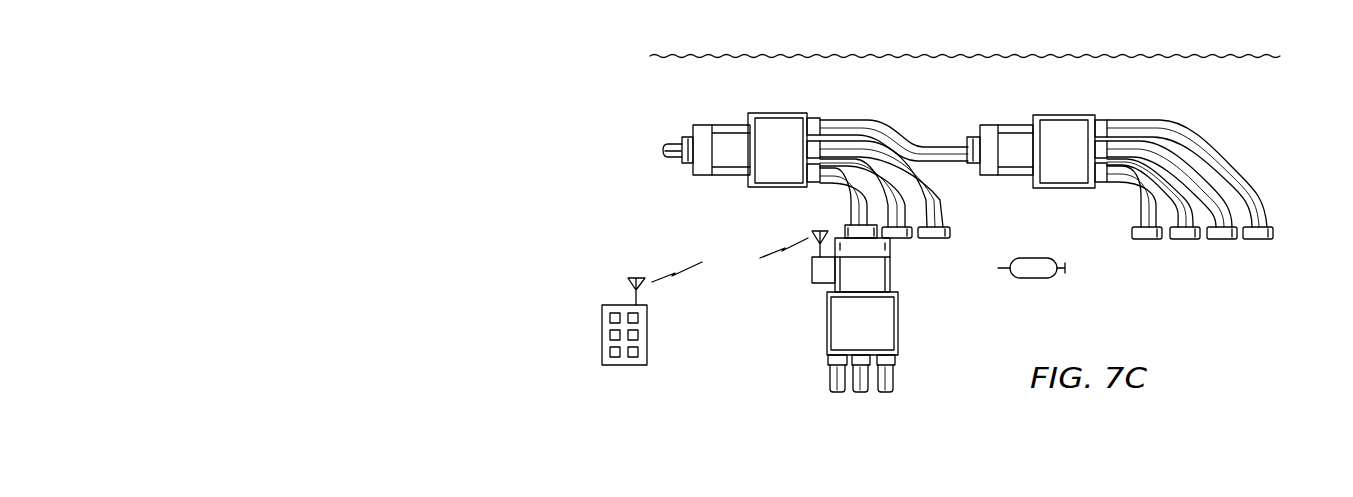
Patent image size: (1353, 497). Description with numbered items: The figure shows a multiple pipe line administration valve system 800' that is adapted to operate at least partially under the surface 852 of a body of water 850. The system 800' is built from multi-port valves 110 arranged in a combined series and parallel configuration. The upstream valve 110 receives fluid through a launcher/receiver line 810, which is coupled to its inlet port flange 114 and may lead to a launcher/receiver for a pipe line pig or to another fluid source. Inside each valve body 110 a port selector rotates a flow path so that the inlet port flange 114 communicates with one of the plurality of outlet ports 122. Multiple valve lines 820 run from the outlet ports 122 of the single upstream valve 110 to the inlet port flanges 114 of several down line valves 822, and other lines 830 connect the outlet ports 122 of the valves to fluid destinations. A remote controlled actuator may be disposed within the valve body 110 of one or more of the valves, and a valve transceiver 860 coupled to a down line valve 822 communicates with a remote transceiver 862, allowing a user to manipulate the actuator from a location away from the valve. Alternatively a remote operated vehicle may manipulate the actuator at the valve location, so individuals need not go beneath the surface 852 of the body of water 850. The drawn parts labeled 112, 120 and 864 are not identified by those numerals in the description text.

The multi-port valve 110 is at (758, 80).
The body 112 is at (720, 125).
The inlet port flange 114 is at (690, 172).
The controller block 120 is at (786, 113).
The outlet ports 122 is at (816, 116).
The launcher/receiver line 810 is at (672, 143).
The valve lines 820 is at (888, 123).
The down line valve 822 is at (1068, 115).
The lines 830 is at (947, 212).
The body of water 850 is at (1208, 96).
The surface 852 is at (1157, 56).
The valve transceiver 860 is at (812, 275).
The remote transceiver 862 is at (602, 336).
The sensor 864 is at (1033, 280).
The valve system 800' is at (572, 169).